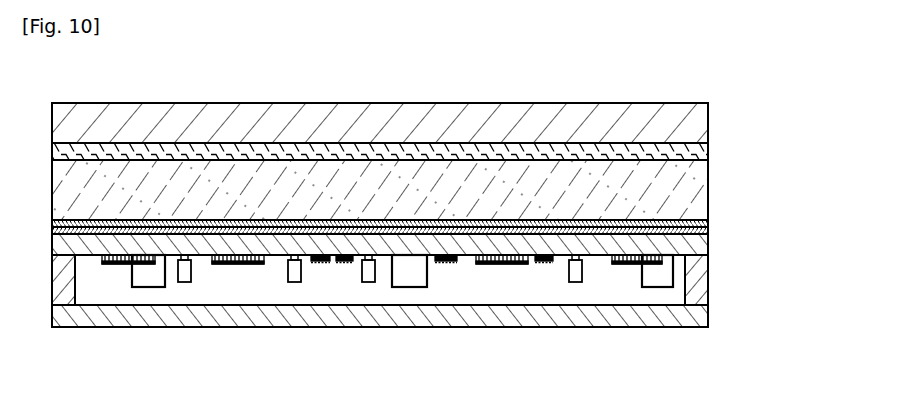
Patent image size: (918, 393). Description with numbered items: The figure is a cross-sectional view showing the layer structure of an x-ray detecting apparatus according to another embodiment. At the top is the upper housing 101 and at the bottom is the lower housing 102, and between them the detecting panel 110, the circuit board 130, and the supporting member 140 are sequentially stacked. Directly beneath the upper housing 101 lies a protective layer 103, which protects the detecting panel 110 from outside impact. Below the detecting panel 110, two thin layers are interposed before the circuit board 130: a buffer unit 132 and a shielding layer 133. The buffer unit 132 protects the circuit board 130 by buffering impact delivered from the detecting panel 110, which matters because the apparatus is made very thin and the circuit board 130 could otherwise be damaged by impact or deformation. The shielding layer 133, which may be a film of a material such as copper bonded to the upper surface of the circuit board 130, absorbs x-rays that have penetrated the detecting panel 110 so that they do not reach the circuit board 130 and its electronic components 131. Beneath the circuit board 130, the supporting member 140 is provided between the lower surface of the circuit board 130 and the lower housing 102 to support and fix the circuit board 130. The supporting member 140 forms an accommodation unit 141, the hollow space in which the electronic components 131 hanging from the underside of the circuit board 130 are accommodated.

The upper housing 101 is at (708, 121).
The lower housing 102 is at (700, 314).
The protective layer 103 is at (708, 153).
The detecting panel 110 is at (700, 186).
The circuit board 130 is at (700, 244).
The electronic components 131 is at (428, 275).
The buffer unit 132 is at (708, 222).
The shielding layer 133 is at (708, 231).
The supporting member 140 is at (697, 281).
The accommodation unit 141 is at (248, 284).